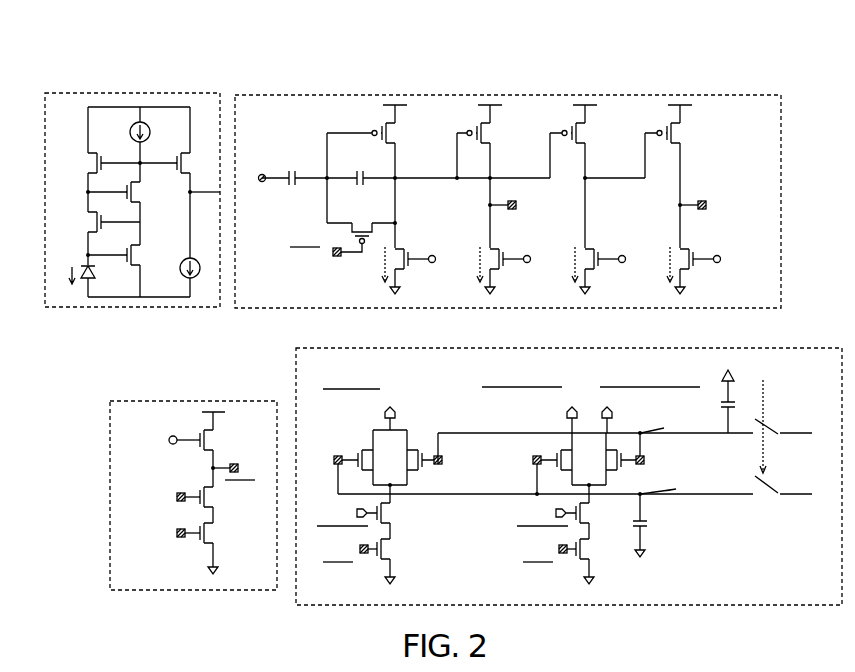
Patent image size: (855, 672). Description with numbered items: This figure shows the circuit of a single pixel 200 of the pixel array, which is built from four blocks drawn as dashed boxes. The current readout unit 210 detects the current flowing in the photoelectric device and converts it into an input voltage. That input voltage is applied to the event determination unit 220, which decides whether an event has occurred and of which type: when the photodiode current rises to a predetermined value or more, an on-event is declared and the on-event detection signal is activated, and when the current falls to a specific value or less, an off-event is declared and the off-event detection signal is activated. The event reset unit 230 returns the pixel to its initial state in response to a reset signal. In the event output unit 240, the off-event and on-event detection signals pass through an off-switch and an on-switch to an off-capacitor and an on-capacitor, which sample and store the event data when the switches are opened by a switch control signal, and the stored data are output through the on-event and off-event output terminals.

The pixel 200 is at (660, 20).
The current readout unit 210 is at (194, 93).
The event determination unit 220 is at (752, 93).
The event reset unit 230 is at (248, 400).
The event output unit 240 is at (812, 347).